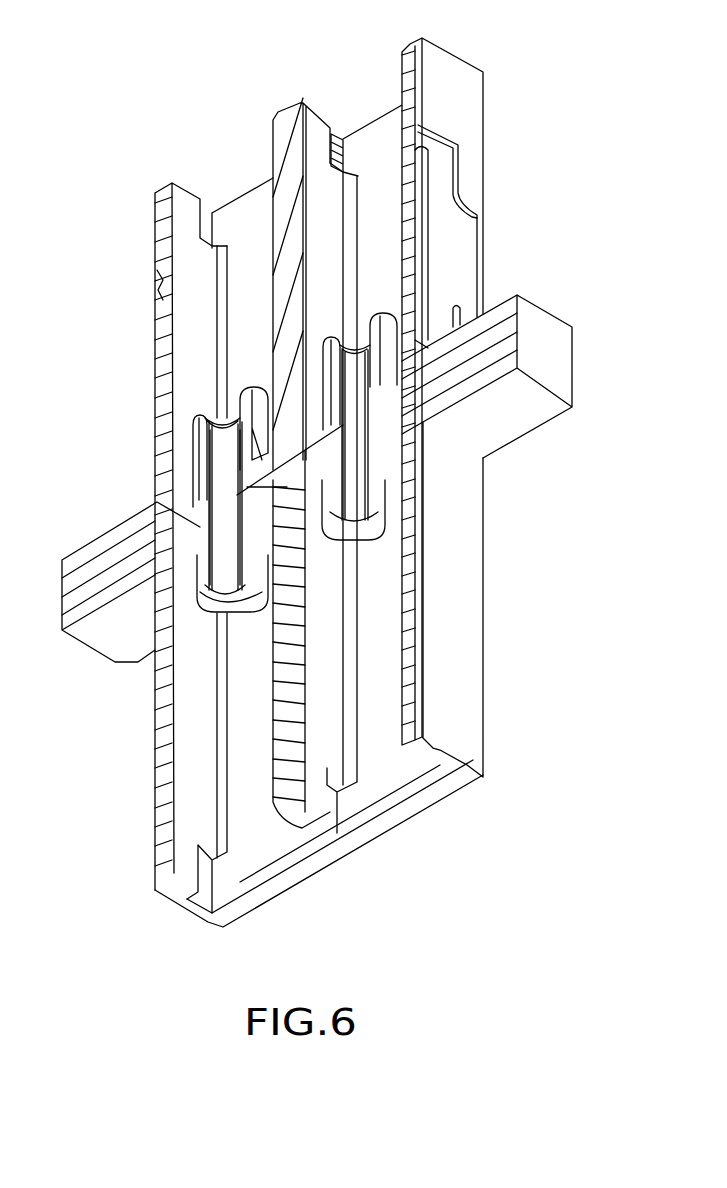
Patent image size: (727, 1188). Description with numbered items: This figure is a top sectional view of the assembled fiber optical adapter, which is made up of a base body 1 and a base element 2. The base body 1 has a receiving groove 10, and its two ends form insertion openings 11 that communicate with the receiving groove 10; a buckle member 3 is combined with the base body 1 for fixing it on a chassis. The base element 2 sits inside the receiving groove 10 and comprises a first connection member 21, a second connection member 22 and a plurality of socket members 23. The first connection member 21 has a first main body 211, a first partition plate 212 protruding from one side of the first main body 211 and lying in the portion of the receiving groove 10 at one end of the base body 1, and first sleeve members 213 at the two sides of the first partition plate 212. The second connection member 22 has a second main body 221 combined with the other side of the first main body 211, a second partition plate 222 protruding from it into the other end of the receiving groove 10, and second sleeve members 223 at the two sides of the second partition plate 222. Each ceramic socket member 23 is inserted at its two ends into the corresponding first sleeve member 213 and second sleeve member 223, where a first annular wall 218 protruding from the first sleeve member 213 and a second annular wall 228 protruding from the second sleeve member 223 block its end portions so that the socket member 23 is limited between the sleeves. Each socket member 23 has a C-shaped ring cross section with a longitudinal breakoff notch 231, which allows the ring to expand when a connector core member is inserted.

The base body 1 is at (160, 733).
The receiving groove 10 is at (192, 826).
The insertion openings 11 is at (265, 853).
The base element 2 is at (556, 681).
The first connection member 21 is at (320, 690).
The first main body 211 is at (205, 497).
The first partition plate 212 is at (287, 617).
The first sleeve members 213 is at (202, 535).
The first annular wall 218 is at (223, 602).
The second connection member 22 is at (317, 130).
The second main body 221 is at (267, 467).
The second partition plate 222 is at (293, 163).
The second sleeve members 223 is at (203, 443).
The second annular wall 228 is at (208, 410).
The socket members 23 is at (222, 433).
The breakoff notch 231 is at (367, 465).
The buckle member 3 is at (455, 240).